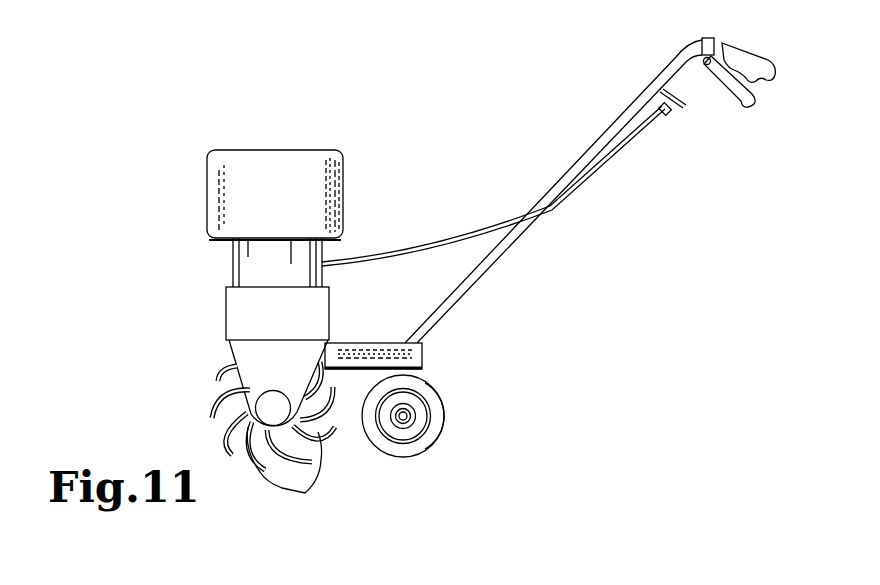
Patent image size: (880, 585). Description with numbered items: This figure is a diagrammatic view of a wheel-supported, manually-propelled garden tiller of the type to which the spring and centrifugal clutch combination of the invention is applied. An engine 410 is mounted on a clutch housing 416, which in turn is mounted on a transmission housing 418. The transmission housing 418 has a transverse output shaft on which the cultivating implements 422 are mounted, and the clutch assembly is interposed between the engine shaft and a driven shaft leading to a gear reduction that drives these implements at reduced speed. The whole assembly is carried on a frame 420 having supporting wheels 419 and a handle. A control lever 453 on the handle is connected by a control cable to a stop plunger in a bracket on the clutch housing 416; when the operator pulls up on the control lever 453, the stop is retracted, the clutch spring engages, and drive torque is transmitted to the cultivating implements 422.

The engine 410 is at (297, 201).
The clutch housing 416 is at (291, 276).
The transmission housing 418 is at (301, 320).
The supporting wheels 419 is at (662, 78).
The frame 420 is at (390, 350).
The cultivating implements 422 is at (308, 493).
The control lever 453 is at (738, 95).